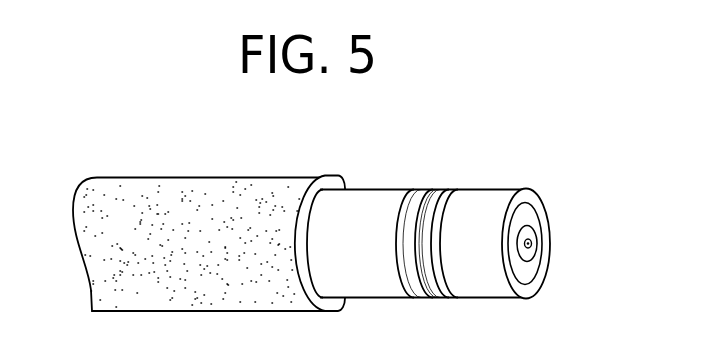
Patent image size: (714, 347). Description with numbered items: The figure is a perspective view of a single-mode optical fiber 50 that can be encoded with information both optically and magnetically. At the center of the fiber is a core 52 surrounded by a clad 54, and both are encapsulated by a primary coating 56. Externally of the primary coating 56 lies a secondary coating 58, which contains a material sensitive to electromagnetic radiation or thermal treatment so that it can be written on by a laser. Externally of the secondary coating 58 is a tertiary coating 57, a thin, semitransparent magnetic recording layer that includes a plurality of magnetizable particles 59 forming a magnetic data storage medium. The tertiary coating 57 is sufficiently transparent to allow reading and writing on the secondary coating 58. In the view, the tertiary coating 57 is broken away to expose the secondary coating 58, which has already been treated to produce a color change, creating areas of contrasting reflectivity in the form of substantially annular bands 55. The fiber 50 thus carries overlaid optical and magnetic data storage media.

The optical fiber 50 is at (552, 170).
The core 52 is at (532, 253).
The clad 54 is at (535, 235).
The substantially annular bands 55 is at (449, 189).
The primary coating 56 is at (527, 218).
The tertiary coating 57 is at (342, 182).
The secondary coating 58 is at (531, 292).
The magnetizable particles 59 is at (226, 192).